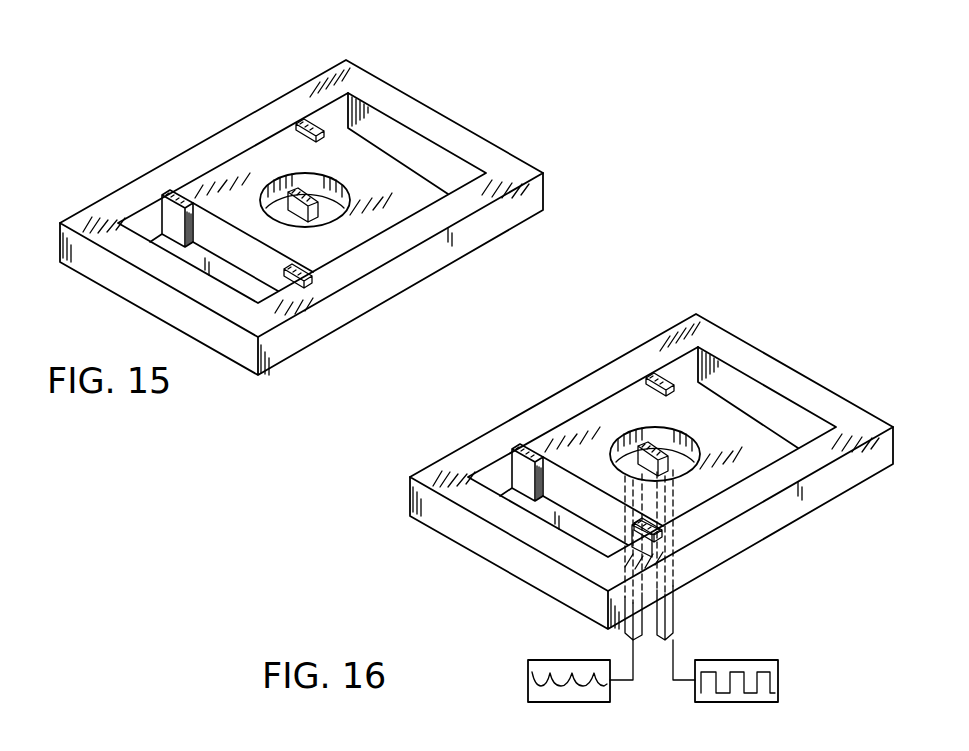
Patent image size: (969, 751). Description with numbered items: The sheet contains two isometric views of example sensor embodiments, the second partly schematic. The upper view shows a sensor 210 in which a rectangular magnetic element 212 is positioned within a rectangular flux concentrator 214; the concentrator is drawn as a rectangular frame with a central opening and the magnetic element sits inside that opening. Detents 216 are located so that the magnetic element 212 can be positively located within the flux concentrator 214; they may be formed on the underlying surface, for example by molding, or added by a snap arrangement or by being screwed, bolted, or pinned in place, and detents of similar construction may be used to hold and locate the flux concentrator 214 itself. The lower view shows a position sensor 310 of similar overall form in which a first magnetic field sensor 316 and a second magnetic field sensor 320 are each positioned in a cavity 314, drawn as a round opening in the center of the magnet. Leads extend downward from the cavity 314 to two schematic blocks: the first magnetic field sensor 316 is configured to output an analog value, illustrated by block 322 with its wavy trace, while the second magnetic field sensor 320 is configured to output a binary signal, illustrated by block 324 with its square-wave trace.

In FIG. 15, the sensor 210 is at (516, 105).
In FIG. 15, the rectangular magnetic element 212 is at (357, 177).
In FIG. 15, the rectangular flux concentrator 214 is at (545, 178).
In FIG. 15, the detents 216 is at (170, 213).
In FIG. 16, the position sensor 310 is at (382, 468).
In FIG. 16, the cavity 314 is at (662, 450).
In FIG. 16, the first magnetic field sensor 316 is at (627, 455).
In FIG. 16, the second magnetic field sensor 320 is at (662, 450).
In FIG. 16, the block 322 is at (553, 660).
In FIG. 16, the block 324 is at (737, 660).